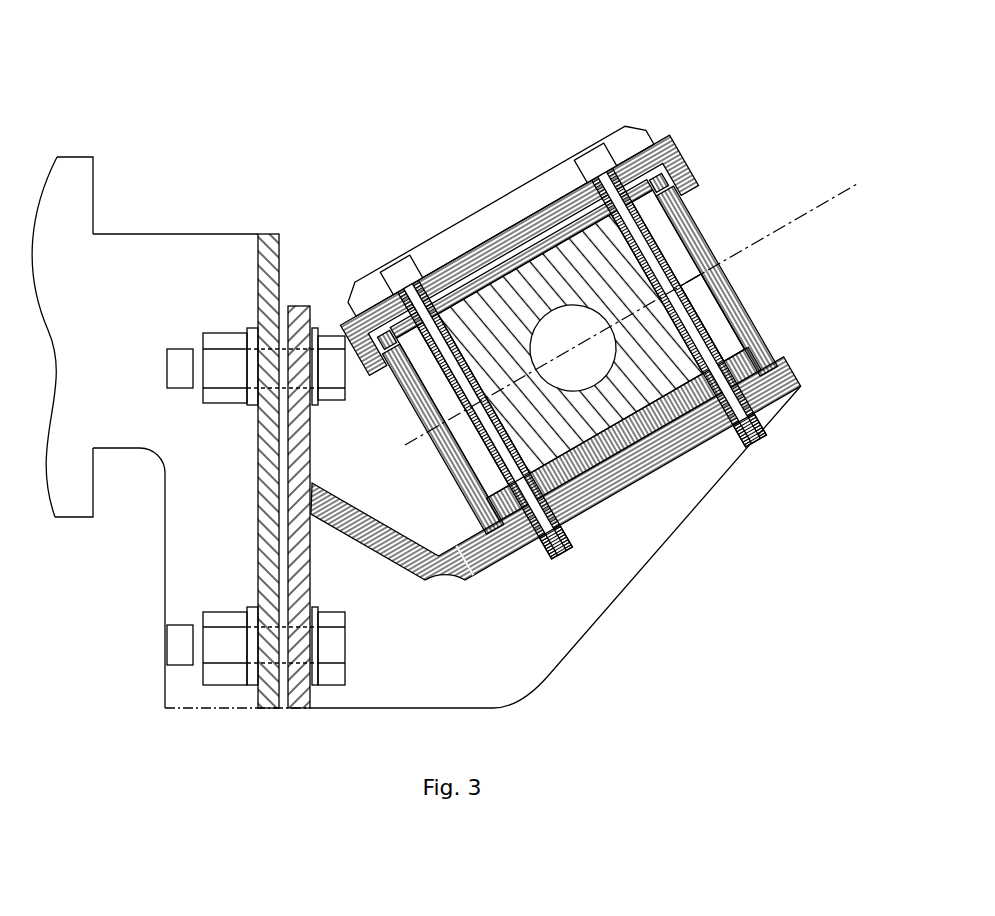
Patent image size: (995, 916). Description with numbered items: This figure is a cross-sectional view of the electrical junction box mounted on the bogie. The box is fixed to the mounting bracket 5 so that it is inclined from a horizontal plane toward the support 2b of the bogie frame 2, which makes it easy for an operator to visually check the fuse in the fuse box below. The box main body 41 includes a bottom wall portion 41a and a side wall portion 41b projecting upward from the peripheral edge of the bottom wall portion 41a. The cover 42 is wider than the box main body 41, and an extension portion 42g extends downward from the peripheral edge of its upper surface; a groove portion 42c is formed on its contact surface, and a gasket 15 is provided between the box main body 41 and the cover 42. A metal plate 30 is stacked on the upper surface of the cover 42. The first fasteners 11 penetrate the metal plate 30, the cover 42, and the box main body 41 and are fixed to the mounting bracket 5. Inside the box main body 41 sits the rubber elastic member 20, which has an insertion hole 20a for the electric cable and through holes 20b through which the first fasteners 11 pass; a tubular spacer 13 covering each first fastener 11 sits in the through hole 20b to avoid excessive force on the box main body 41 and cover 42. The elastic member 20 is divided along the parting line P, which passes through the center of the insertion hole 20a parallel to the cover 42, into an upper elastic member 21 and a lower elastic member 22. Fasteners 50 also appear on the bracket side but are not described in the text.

The bogie frame 2 is at (78, 152).
The support 2b is at (163, 232).
The mounting bracket 5 is at (457, 580).
The first fastener 11 is at (563, 550).
The tubular spacer 13 is at (545, 522).
The gasket 15 is at (352, 316).
The elastic member 20 is at (618, 440).
The insertion hole 20a is at (662, 425).
The through hole 20b is at (414, 336).
The upper elastic member 21 is at (486, 332).
The lower elastic member 22 is at (580, 440).
The metal plate 30 is at (546, 162).
The box main body 41 is at (748, 300).
The bottom wall portion 41a is at (748, 450).
The side wall portion 41b is at (470, 447).
The cover 42 is at (683, 150).
The groove portion 42c is at (360, 330).
The extension portion 42g is at (700, 193).
The fastening bolt 50 is at (325, 403).
The parting line P is at (812, 205).